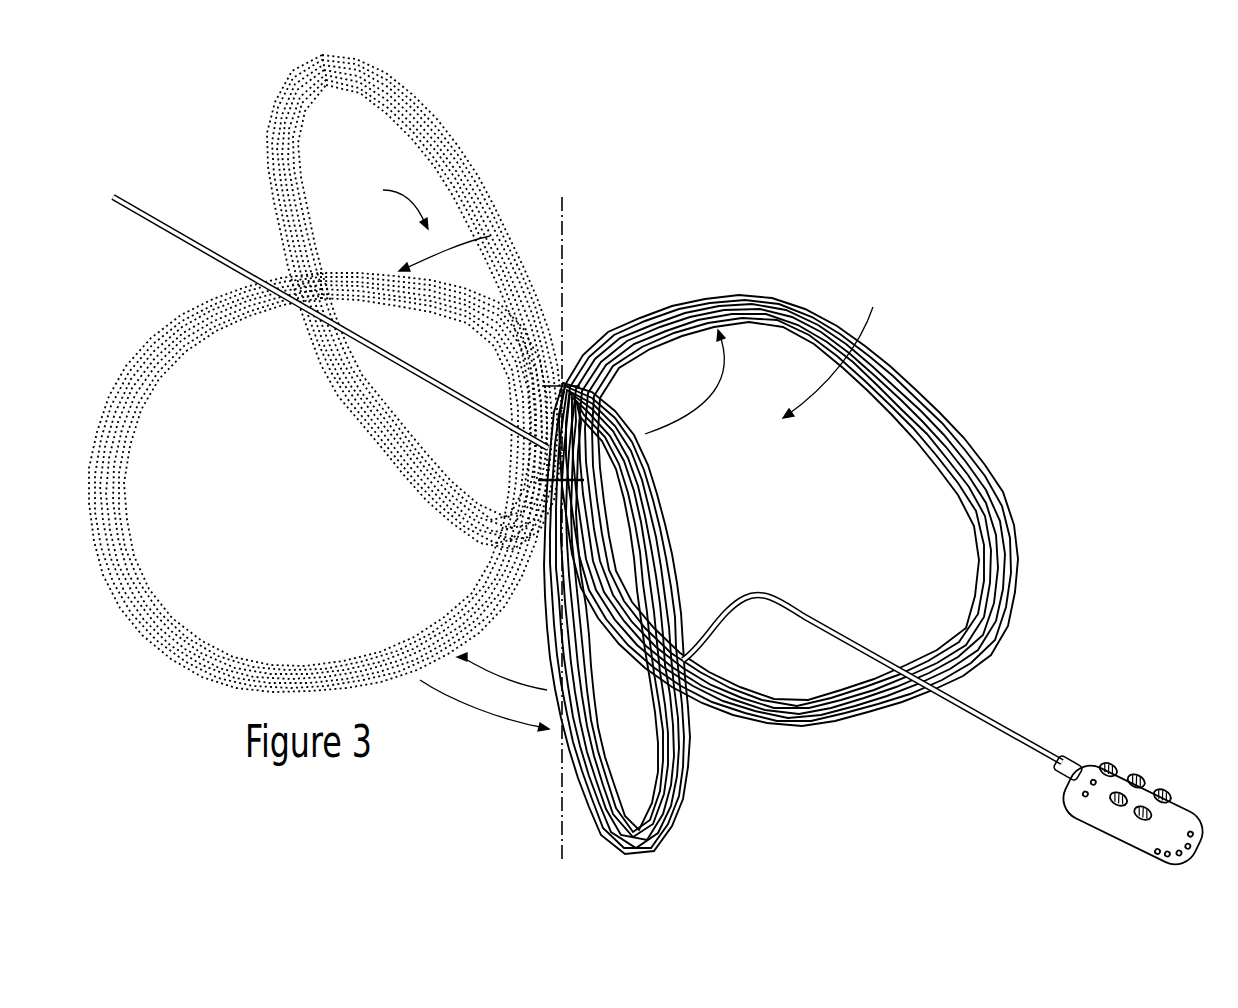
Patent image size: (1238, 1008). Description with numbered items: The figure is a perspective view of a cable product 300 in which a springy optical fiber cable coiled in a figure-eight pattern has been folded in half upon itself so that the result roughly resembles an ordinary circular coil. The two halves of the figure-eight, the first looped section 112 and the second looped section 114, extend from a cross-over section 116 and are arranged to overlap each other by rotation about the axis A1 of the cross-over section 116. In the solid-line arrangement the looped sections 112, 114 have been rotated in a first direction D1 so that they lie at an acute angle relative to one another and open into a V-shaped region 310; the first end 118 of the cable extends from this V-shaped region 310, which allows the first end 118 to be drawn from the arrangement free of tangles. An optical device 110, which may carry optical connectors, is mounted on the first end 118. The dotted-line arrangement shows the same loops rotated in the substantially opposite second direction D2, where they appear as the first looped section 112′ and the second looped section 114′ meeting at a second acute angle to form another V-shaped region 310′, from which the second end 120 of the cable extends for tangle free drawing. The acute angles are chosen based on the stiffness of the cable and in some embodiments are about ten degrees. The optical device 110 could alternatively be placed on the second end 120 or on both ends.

The optical device 110 is at (1156, 790).
The first looped section 112 is at (676, 858).
The first looped section (rotated in second direction) 112′ is at (150, 412).
The second looped section 114 is at (1004, 472).
The second looped section (rotated in second direction) 114′ is at (410, 97).
The cross-over section 116 is at (575, 340).
The first end 118 is at (1046, 748).
The second end 120 is at (141, 205).
The cable product 300 is at (876, 541).
The V-shaped region 310 is at (836, 350).
The V-shaped region (second direction) 310′ is at (385, 205).
The axis of the cross-over section A1 is at (563, 545).
The first direction D1 is at (484, 716).
The second direction D2 is at (502, 671).